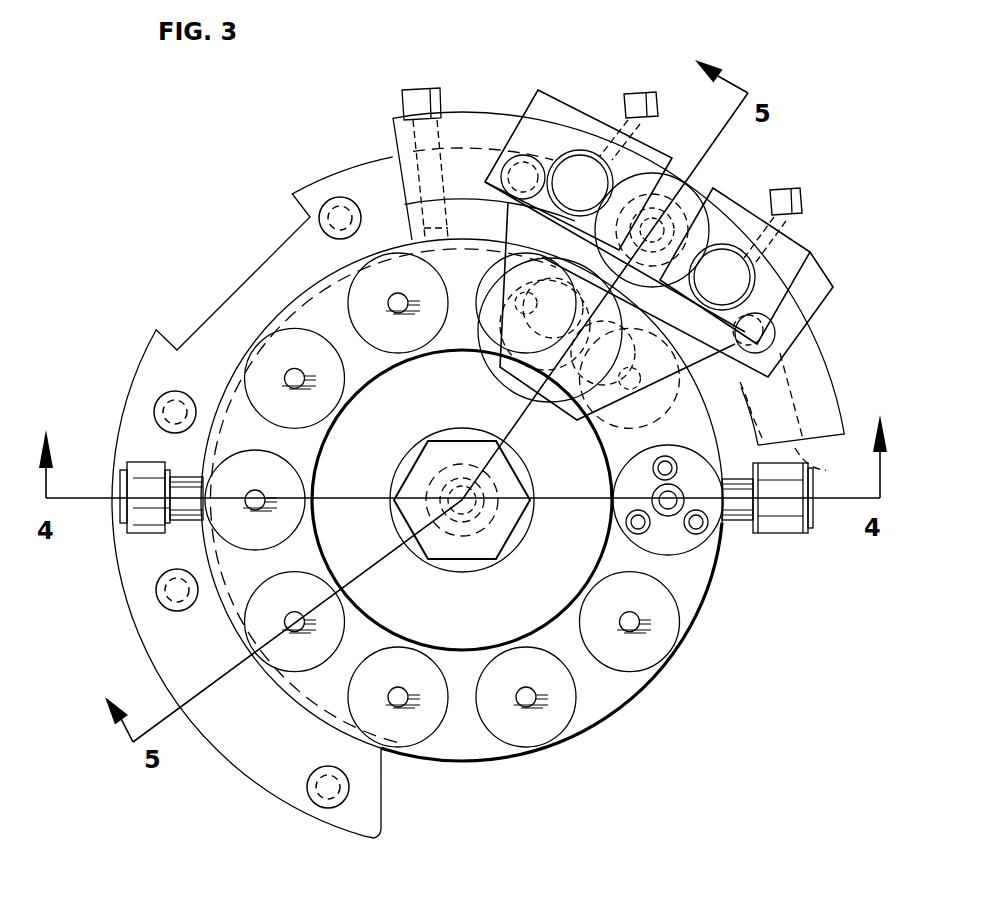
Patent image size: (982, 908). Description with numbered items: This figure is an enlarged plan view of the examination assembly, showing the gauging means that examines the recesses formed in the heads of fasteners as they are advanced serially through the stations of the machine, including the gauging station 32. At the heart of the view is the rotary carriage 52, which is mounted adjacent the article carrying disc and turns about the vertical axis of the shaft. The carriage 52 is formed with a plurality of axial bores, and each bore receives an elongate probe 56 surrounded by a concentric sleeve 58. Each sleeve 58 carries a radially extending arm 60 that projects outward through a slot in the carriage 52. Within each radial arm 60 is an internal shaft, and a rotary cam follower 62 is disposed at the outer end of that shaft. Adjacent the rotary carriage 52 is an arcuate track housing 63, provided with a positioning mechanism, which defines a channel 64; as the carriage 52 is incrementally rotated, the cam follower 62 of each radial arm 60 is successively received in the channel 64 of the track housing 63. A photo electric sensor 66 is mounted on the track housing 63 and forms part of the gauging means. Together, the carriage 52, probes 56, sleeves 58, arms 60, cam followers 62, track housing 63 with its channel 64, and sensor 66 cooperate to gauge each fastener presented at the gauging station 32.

The gauging station 32 is at (542, 414).
The rotary carriage 52 is at (478, 747).
The elongate probe 56 is at (639, 624).
The concentric sleeve 58 is at (635, 658).
The radially extending arm 60 is at (742, 522).
The rotary cam follower 62 is at (775, 534).
The arcuate track housing 63 is at (813, 377).
The channel 64 is at (824, 470).
The photo electric sensor 66 is at (680, 195).